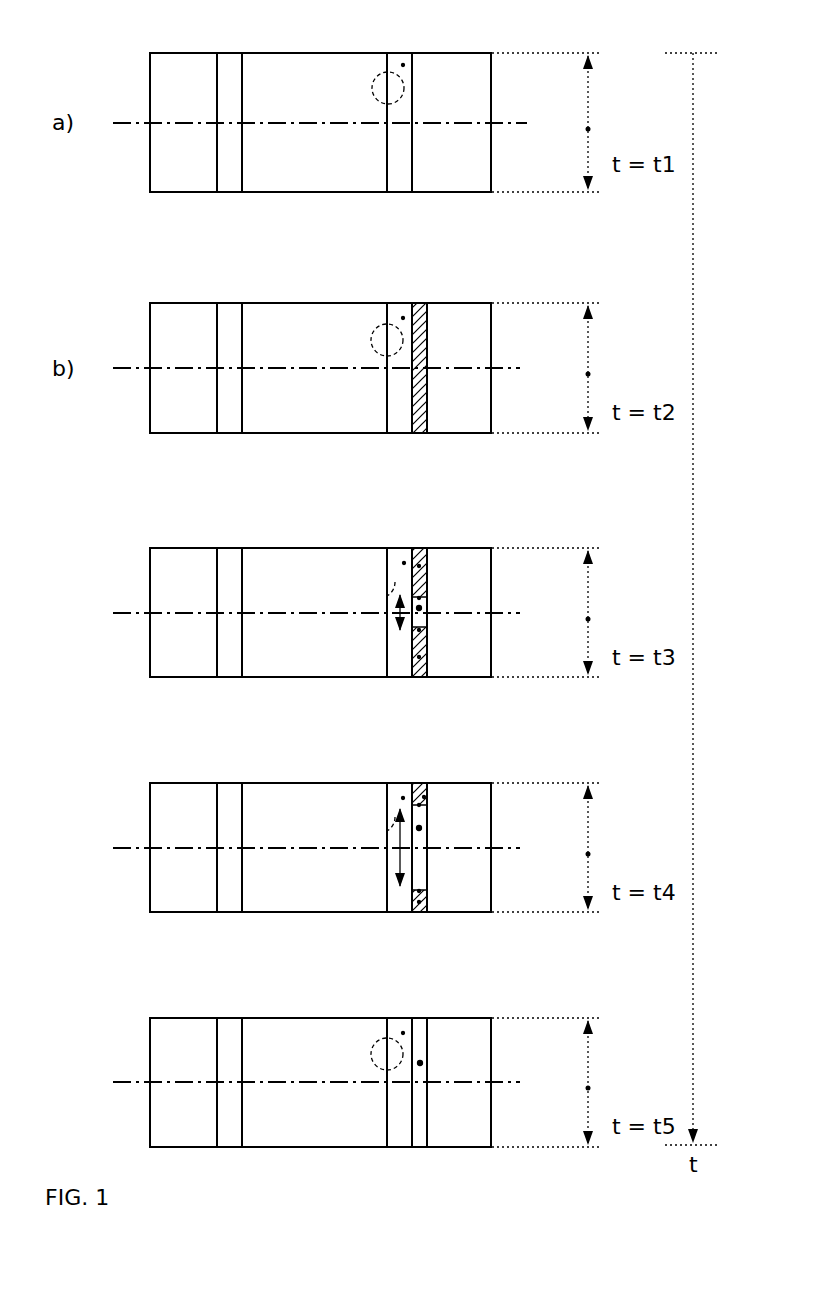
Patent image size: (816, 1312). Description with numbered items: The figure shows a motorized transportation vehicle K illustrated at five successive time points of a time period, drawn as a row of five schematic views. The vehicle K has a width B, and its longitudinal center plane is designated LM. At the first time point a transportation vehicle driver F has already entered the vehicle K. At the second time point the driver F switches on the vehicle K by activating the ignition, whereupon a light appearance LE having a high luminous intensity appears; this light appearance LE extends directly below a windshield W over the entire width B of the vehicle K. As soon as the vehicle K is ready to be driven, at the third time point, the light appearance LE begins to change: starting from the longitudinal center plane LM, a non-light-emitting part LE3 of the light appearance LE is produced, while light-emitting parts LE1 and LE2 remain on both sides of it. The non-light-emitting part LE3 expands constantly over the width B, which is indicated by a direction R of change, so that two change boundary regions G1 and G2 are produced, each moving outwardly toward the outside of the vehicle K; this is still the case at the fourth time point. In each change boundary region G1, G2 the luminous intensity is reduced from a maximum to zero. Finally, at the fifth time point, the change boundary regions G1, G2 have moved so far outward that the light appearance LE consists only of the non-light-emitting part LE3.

The motorized transportation vehicle K is at (138, 159).
The longitudinal center plane LM is at (126, 115).
The transportation vehicle driver F is at (371, 82).
The windshield W is at (402, 62).
The width B is at (590, 128).
The light appearance LE is at (434, 361).
The light-emitting part LE1 is at (422, 560).
The light-emitting part LE2 is at (422, 660).
The non-light-emitting part LE3 is at (422, 609).
The change boundary region G1 is at (422, 596).
The change boundary region G2 is at (423, 633).
The direction of change R is at (392, 610).